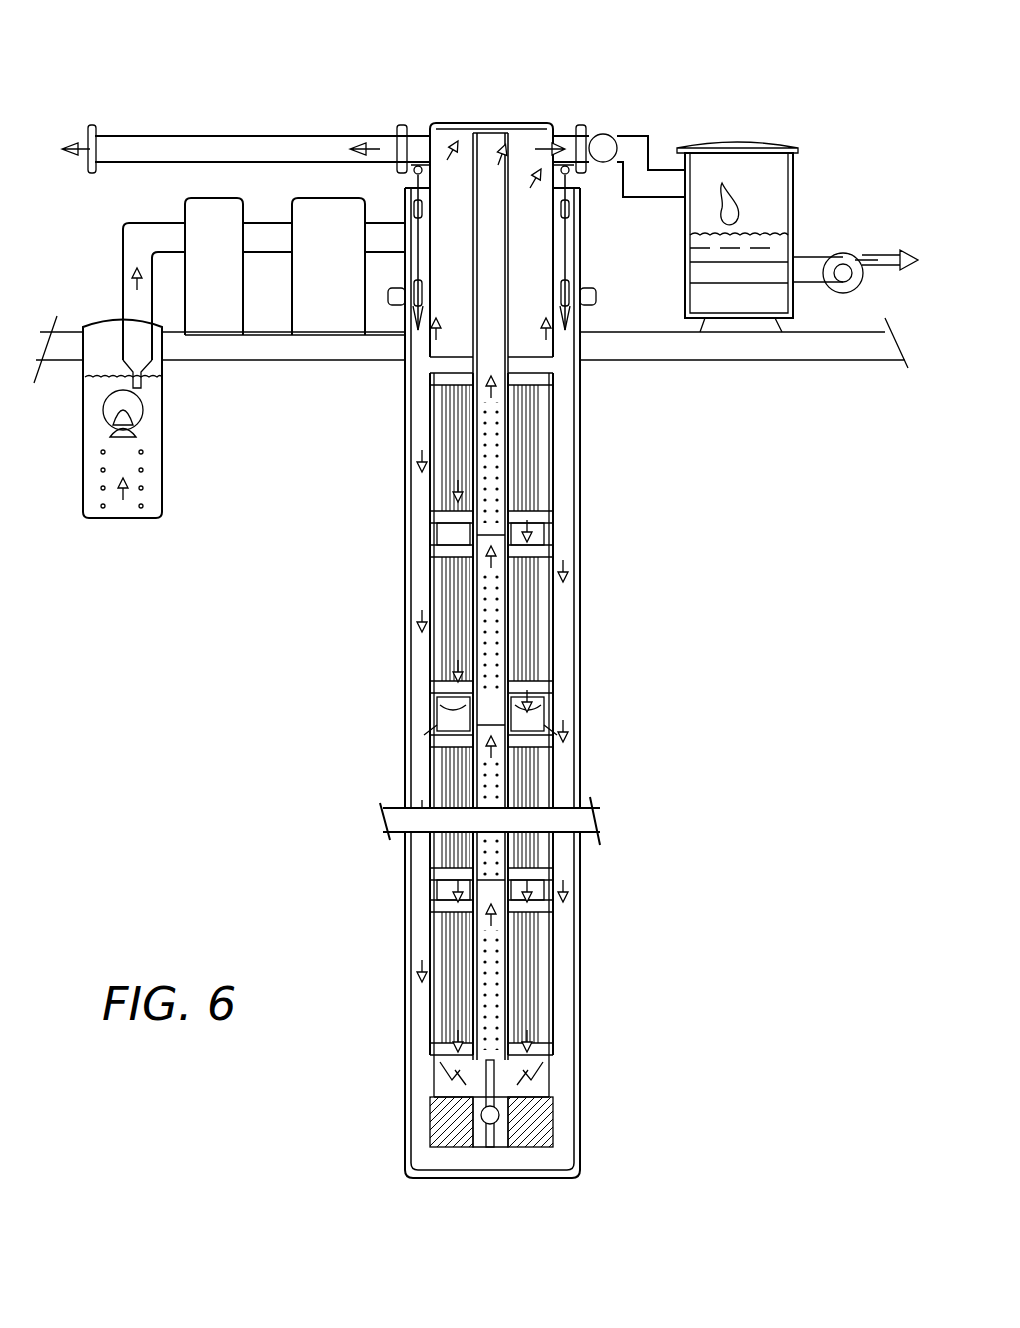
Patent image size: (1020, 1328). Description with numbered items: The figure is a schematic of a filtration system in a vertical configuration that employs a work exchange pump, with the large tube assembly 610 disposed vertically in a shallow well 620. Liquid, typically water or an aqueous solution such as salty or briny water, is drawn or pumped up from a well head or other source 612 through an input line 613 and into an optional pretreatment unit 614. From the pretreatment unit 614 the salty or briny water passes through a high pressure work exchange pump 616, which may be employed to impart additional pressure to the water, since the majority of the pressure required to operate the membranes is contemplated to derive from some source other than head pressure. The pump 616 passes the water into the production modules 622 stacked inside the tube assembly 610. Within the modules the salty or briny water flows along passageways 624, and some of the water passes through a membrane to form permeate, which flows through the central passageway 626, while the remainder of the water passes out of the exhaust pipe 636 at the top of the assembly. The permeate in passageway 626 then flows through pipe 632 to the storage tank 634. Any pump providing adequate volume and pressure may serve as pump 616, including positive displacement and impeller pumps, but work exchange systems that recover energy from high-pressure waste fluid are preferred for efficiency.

The large tube assembly 610 is at (748, 84).
The well head or other source 612 is at (95, 322).
The input line 613 is at (122, 243).
The pretreatment unit 614 is at (236, 277).
The high pressure work exchange pump 616 is at (348, 277).
The well 620 is at (580, 914).
The production modules 622 is at (557, 450).
The passageways 624 is at (420, 552).
The passageway 626 is at (492, 655).
The pipe 632 is at (618, 138).
The storage tank 634 is at (795, 190).
The exhaust pipe 636 is at (214, 136).